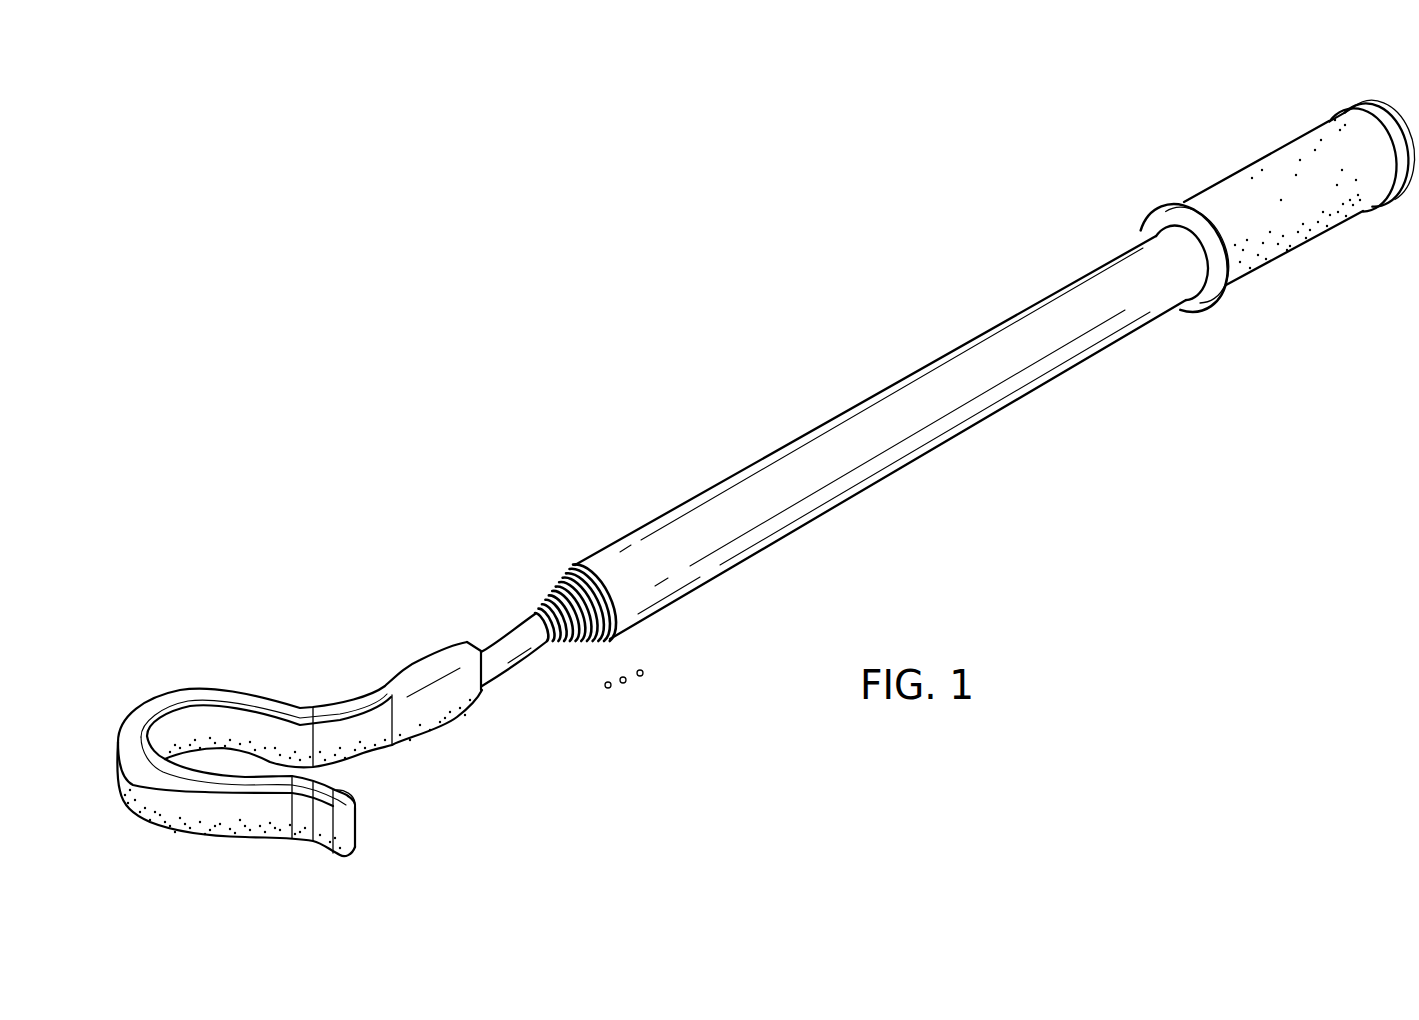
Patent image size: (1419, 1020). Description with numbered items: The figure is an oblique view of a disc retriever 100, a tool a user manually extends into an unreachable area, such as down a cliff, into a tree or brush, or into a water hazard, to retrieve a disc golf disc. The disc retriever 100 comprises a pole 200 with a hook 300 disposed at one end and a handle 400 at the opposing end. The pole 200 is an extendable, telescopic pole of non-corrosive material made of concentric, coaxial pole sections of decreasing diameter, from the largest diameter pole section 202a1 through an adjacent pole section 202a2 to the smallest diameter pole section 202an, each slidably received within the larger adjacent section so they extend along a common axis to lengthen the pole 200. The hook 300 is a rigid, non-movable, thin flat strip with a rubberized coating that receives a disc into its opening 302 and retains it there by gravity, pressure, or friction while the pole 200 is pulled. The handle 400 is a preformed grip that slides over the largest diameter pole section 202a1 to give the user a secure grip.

The disc retriever 100 is at (308, 381).
The pole 200 is at (857, 393).
The largest diameter pole section 202a1 is at (710, 583).
The pole section 202a2 is at (604, 643).
The smallest diameter pole section 202an is at (501, 676).
The hook 300 is at (159, 691).
The opening 302 is at (354, 774).
The handle 400 is at (1256, 153).